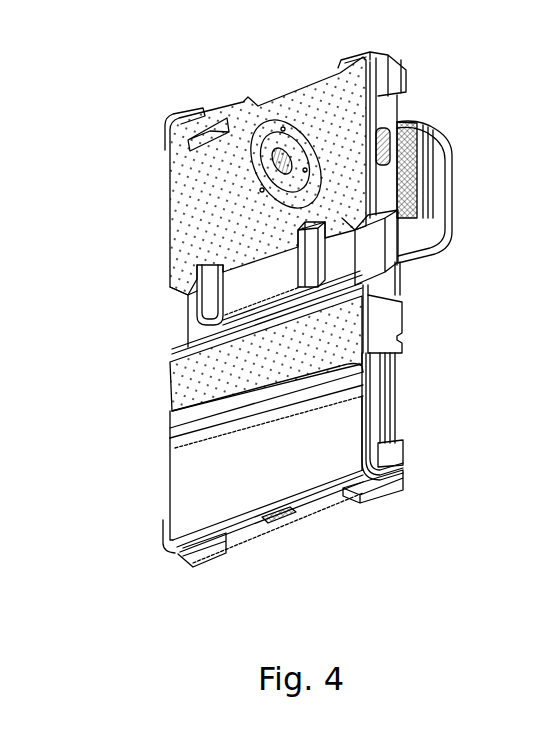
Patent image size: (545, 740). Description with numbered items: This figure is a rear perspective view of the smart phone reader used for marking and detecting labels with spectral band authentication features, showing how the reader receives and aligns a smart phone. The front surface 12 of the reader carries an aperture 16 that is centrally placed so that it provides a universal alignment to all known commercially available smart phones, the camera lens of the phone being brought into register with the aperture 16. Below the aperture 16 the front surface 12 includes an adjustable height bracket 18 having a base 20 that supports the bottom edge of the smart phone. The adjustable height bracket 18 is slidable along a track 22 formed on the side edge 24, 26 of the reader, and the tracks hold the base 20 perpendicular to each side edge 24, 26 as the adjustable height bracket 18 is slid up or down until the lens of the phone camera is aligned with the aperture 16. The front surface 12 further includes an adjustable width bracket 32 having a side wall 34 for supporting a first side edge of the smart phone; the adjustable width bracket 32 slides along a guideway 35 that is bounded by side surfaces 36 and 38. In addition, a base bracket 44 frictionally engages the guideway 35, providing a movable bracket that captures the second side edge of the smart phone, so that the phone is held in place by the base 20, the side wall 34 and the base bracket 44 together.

The front surface 12 is at (343, 437).
The aperture 16 is at (290, 156).
The adjustable height bracket 18 is at (380, 329).
The base 20 is at (170, 440).
The track 22 is at (396, 398).
The side edge 24 is at (395, 265).
The side edge 26 is at (170, 485).
The adjustable width bracket 32 is at (172, 290).
The side wall 34 is at (183, 335).
The guideway 35 is at (372, 248).
The side surface 36 is at (197, 309).
The side surface 38 is at (175, 367).
The base bracket 44 is at (430, 168).